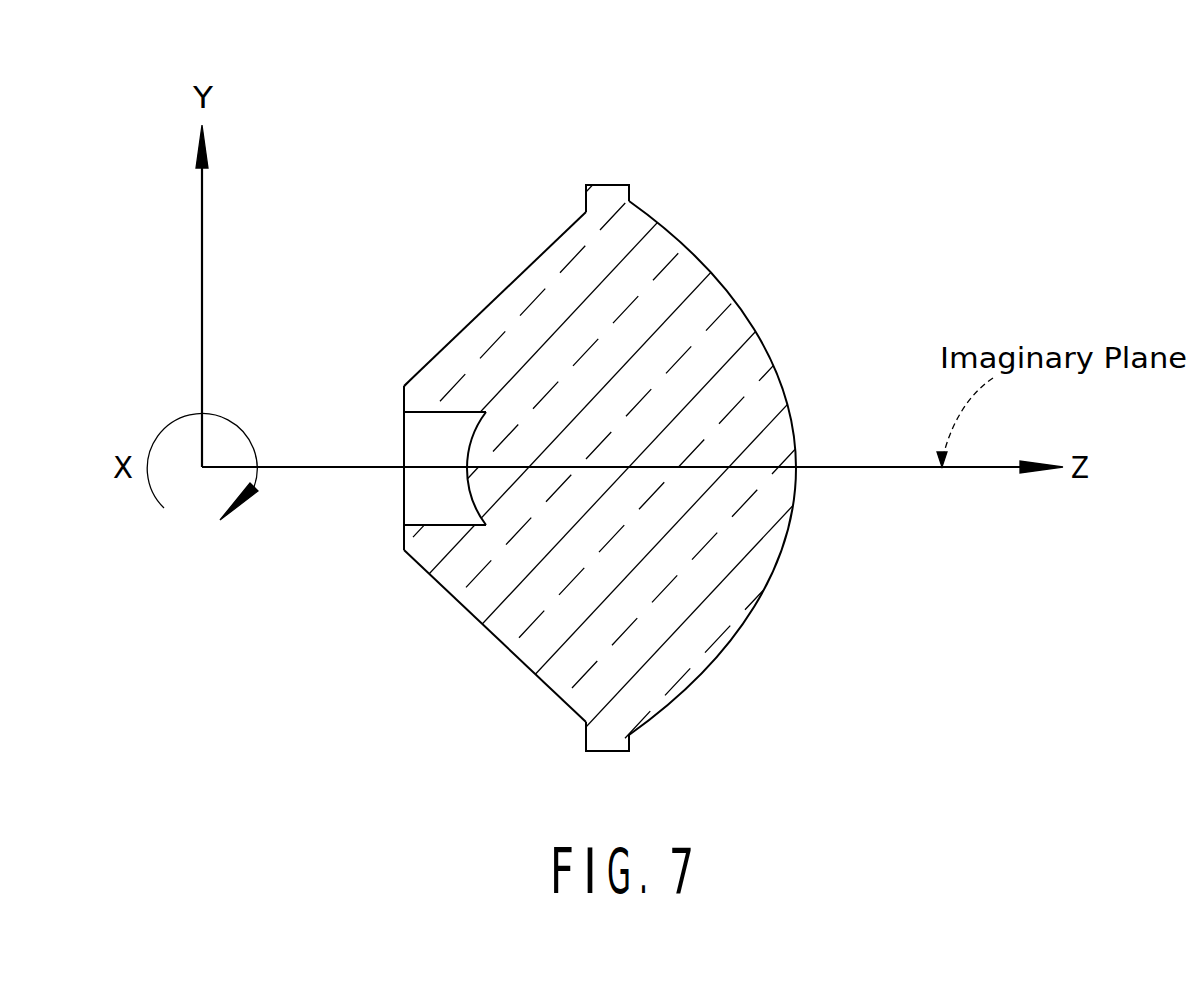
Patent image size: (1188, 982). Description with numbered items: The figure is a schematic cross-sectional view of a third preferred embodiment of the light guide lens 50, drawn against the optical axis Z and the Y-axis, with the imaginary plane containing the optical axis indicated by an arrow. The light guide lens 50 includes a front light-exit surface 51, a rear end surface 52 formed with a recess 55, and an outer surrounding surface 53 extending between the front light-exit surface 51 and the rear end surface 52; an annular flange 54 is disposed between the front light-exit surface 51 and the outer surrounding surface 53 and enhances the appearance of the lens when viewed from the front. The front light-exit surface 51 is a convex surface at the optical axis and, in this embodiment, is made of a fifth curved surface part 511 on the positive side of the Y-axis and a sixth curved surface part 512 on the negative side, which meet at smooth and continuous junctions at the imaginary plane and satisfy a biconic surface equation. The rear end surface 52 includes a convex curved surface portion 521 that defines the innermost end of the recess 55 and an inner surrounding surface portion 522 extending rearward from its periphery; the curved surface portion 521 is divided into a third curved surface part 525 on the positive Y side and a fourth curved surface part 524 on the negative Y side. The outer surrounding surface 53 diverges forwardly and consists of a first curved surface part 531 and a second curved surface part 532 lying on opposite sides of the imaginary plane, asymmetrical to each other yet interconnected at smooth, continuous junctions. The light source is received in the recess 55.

The light guide lens 50 is at (637, 167).
The front light-exit surface 51 is at (752, 305).
The fifth curved surface part 511 is at (765, 350).
The sixth curved surface part 512 is at (762, 595).
The rear end surface 52 is at (404, 537).
The curved surface portion 521 is at (458, 453).
The inner surrounding surface portion 522 is at (437, 525).
The fourth curved surface part 524 is at (477, 505).
The third curved surface part 525 is at (470, 440).
The outer surrounding surface 53 is at (556, 222).
The first curved surface part 531 is at (523, 263).
The second curved surface part 532 is at (505, 648).
The annular flange 54 is at (610, 192).
The recess 55 is at (413, 458).